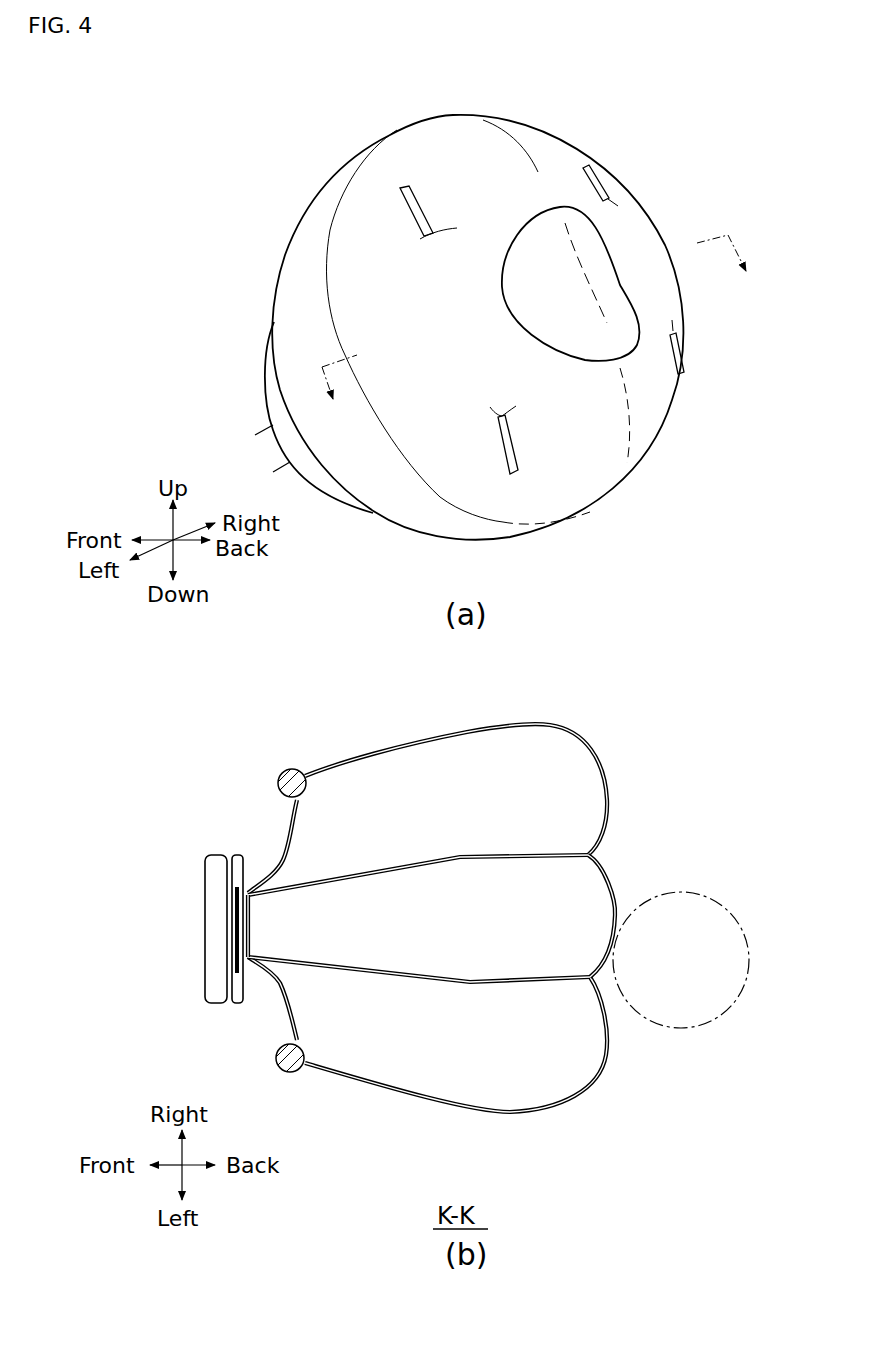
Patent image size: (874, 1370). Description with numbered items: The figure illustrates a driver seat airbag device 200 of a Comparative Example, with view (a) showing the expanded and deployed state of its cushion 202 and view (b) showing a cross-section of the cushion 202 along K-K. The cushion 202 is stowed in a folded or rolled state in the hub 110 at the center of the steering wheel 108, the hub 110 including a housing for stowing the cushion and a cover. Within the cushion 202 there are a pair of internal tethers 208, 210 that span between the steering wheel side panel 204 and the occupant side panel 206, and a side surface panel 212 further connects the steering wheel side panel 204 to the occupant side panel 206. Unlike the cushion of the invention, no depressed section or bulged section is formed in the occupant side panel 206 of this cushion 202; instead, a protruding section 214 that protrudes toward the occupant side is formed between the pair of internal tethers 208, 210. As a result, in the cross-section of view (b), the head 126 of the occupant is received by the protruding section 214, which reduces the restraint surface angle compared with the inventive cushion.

The driver seat airbag device 200 is at (364, 104).
The cushion 202 is at (319, 186).
The steering wheel side panel 204 is at (250, 928).
The occupant side panel 206 is at (563, 165).
The internal tether 208 is at (410, 858).
The internal tether 210 is at (417, 978).
The side surface panel 212 is at (404, 513).
The protruding section 214 is at (565, 344).
The steering wheel 108 is at (273, 368).
The hub 110 is at (234, 918).
The head 126 is at (712, 895).